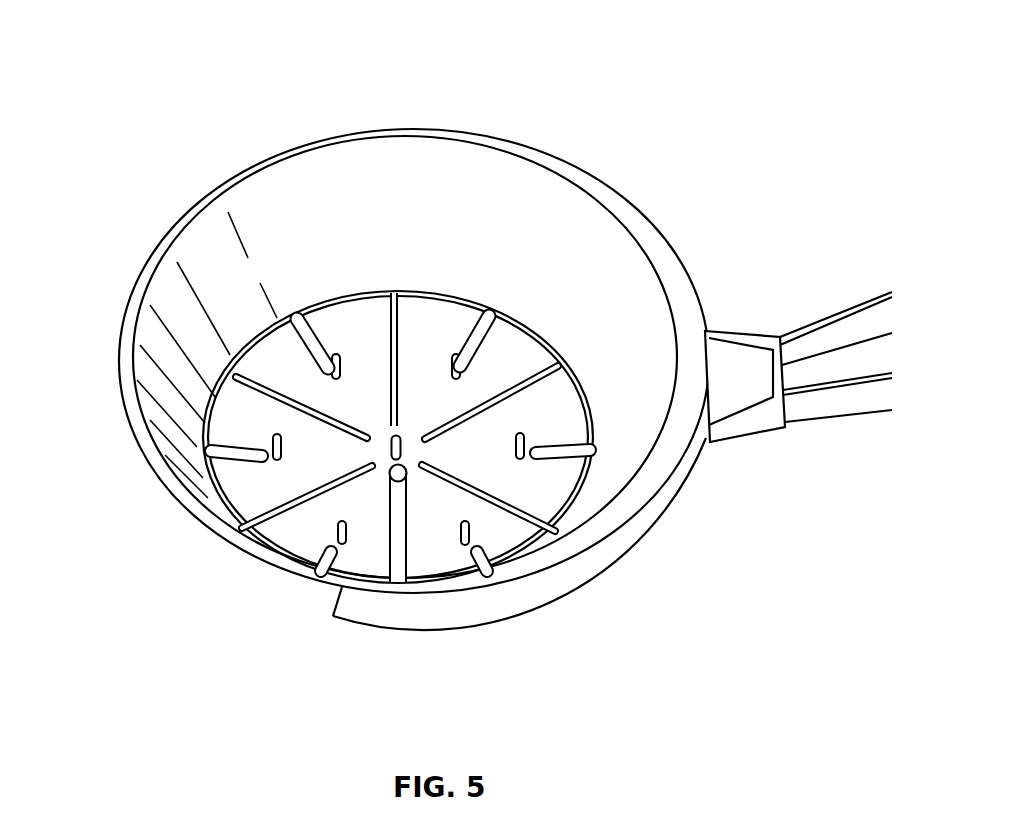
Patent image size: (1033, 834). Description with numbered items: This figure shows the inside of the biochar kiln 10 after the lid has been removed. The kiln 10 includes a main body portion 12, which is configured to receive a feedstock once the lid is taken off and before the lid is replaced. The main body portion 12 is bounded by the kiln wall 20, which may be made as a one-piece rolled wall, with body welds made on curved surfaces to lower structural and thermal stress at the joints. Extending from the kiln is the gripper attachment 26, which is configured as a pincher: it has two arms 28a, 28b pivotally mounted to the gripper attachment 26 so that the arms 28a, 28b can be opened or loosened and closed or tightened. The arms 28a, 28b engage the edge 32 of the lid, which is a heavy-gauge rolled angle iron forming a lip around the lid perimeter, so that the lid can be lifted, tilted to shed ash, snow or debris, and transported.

The biochar kiln 10 is at (461, 362).
The main body portion 12 is at (132, 298).
The kiln wall 20 is at (442, 128).
The gripper attachment 26 is at (775, 292).
The arm 28a is at (683, 295).
The arm 28b is at (667, 513).
The edge 32 is at (260, 576).